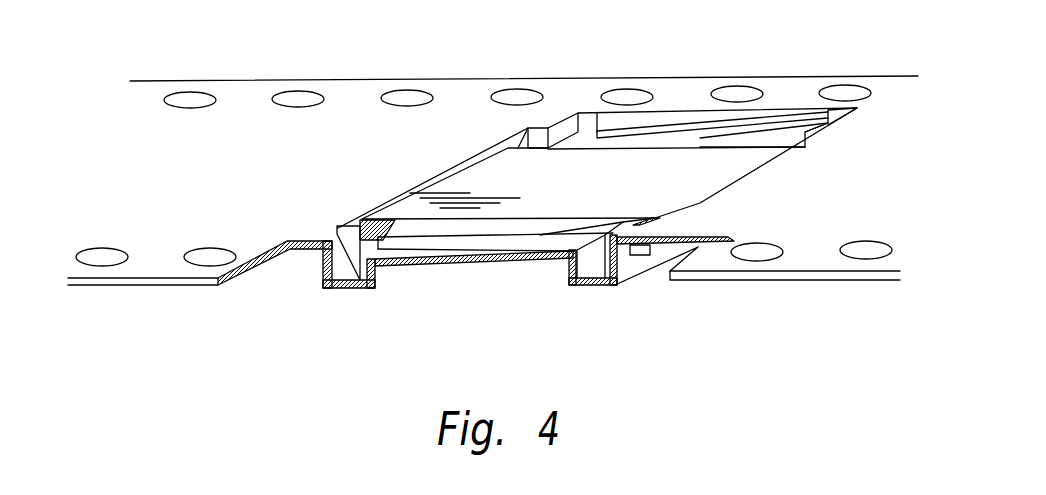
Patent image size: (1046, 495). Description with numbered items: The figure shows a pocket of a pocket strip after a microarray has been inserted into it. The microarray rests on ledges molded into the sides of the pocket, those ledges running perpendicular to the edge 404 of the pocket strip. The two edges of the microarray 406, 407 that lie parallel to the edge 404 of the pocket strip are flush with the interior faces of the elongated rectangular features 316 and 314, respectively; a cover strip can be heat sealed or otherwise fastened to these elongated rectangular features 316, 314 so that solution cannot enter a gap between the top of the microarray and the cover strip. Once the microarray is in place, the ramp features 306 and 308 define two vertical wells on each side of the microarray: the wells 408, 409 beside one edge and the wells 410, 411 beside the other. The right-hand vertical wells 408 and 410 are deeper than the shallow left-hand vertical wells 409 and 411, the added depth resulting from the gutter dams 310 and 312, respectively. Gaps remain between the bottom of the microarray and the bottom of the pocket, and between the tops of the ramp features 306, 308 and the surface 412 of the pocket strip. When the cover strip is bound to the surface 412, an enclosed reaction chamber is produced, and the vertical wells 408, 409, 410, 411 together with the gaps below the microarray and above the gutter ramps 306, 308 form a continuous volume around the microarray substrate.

The edge of the pocket strip 404 is at (690, 78).
The edge of the microarray 406 is at (513, 140).
The edge of the microarray 407 is at (327, 272).
The right-hand vertical well 408 is at (597, 290).
The left-hand vertical well 409 is at (340, 289).
The right-hand vertical well 410 is at (862, 108).
The left-hand vertical well 411 is at (563, 132).
The surface of the pocket strip 412 is at (352, 100).
The ramp feature 306 is at (493, 248).
The ramp feature 308 is at (777, 127).
The gutter dam 310 is at (592, 260).
The gutter dam 312 is at (828, 110).
The elongated rectangular feature 314 is at (437, 228).
The elongated rectangular feature 316 is at (598, 143).